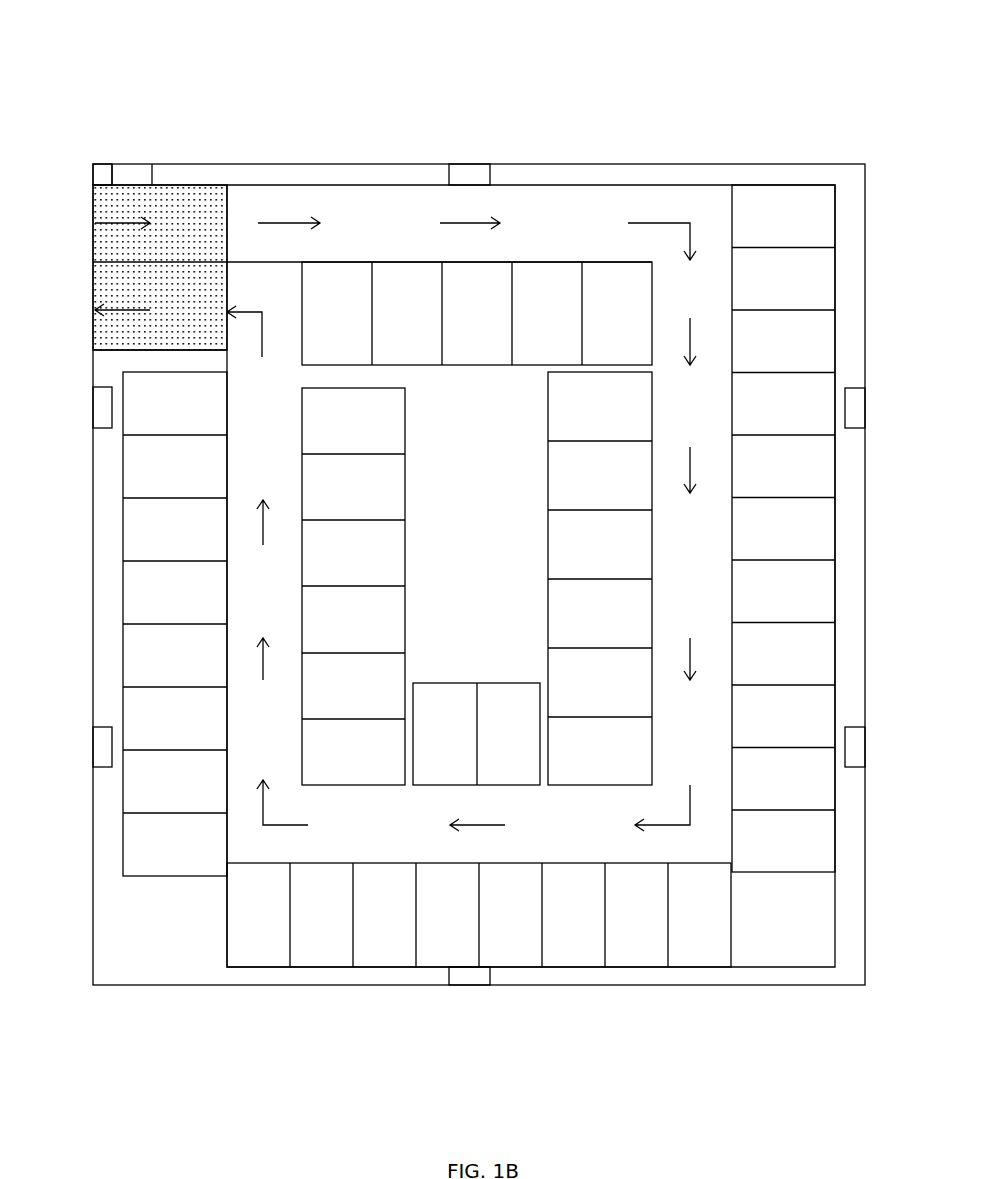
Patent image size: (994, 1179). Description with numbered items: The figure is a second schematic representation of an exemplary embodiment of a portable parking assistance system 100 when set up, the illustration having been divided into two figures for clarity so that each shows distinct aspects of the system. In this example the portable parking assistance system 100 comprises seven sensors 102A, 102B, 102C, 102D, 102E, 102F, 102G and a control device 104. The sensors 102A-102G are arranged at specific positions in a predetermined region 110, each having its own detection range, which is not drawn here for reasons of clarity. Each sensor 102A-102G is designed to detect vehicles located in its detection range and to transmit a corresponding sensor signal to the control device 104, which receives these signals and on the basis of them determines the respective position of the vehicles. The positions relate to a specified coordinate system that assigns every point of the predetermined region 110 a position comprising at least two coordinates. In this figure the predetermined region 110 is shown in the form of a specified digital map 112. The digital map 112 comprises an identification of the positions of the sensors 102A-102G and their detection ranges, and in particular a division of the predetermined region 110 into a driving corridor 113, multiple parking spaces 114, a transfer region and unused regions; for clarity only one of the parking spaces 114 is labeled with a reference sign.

The portable parking assistance system 100 is at (196, 71).
The sensor 102A is at (92, 178).
The sensor 102B is at (478, 164).
The sensor 102C is at (866, 410).
The sensor 102D is at (866, 745).
The sensor 102E is at (470, 985).
The sensor 102F is at (92, 745).
The sensor 102G is at (92, 408).
The control device 104 is at (132, 164).
The predetermined region 110 is at (345, 164).
The specified digital map 112 is at (615, 164).
The driving corridor 113 is at (644, 185).
The parking space 114 is at (781, 185).